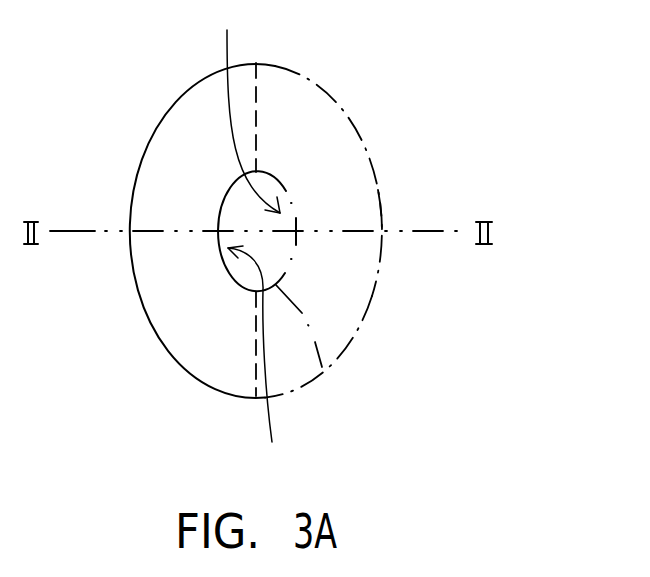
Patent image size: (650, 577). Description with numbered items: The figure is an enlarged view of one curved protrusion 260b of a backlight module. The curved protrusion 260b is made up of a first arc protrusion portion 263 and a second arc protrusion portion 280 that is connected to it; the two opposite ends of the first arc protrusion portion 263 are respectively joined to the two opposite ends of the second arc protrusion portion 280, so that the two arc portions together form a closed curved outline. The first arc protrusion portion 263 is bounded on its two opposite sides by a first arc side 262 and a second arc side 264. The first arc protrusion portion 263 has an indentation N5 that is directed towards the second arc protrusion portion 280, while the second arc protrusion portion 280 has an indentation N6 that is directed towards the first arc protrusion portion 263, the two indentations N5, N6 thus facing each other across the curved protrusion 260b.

The curved protrusion 260b is at (619, 443).
The second arc protrusion portion 280 is at (183, 311).
The first arc protrusion portion 263 is at (320, 148).
The first arc side 262 is at (377, 286).
The second arc side 264 is at (323, 392).
The indentation N5 is at (246, 108).
The indentation N6 is at (258, 360).